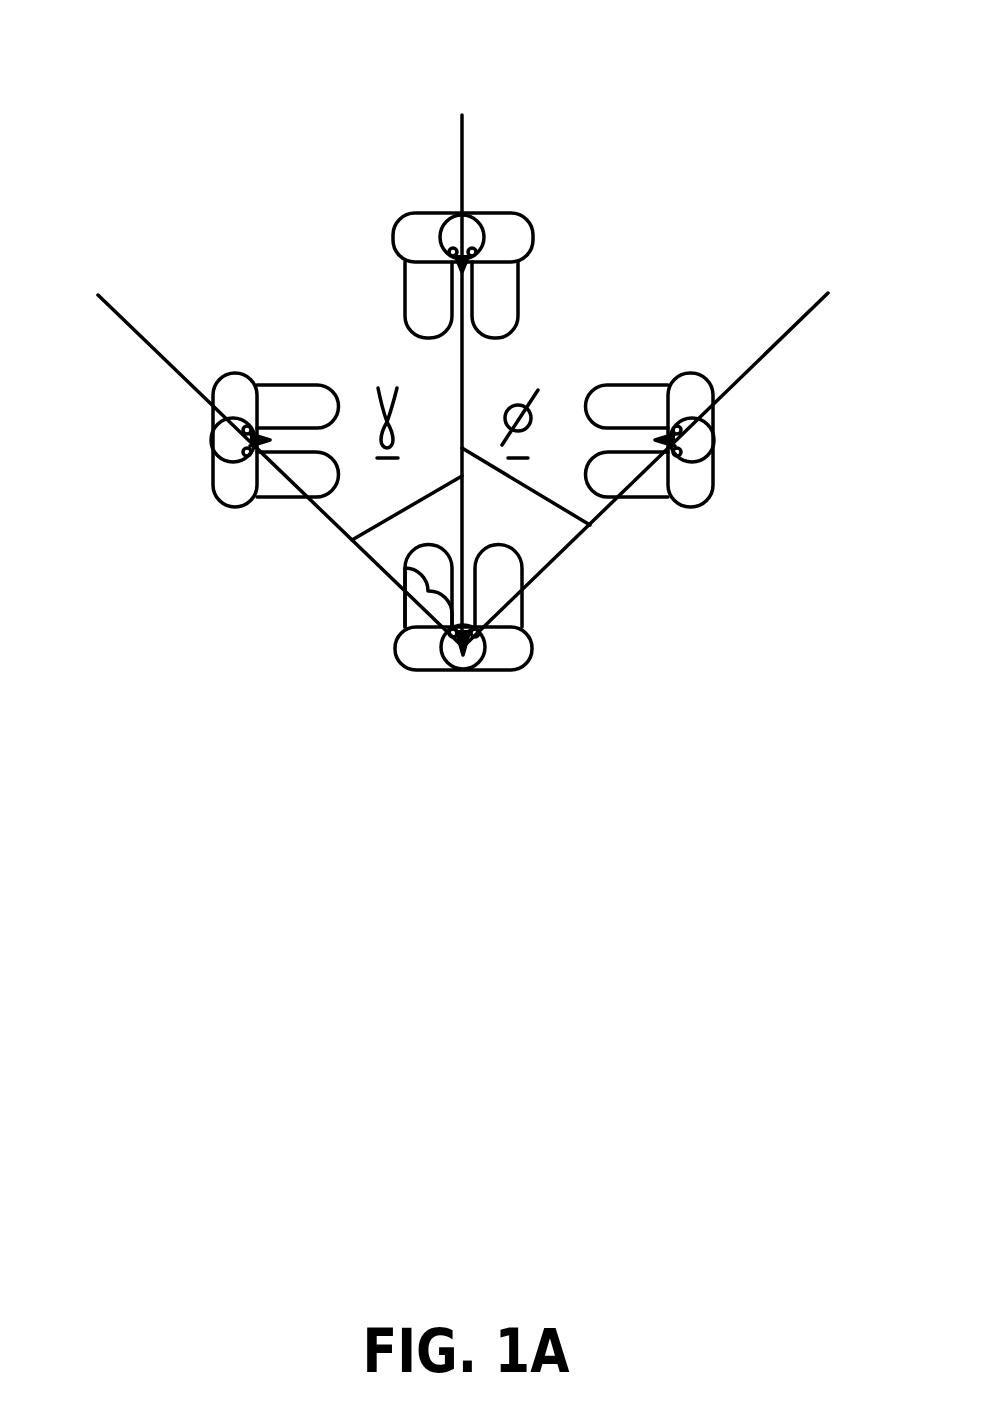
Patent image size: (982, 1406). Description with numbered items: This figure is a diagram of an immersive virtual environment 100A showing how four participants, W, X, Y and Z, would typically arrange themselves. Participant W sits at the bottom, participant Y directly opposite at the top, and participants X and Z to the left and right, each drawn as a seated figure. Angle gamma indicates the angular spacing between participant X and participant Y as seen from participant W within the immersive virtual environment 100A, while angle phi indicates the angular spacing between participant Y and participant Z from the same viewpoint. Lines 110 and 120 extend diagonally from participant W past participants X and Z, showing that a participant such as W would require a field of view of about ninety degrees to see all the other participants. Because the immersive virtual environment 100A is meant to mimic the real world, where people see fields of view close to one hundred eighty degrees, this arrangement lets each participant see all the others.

The immersive virtual environment 100A is at (421, 41).
The line 110 is at (140, 337).
The line 120 is at (785, 338).